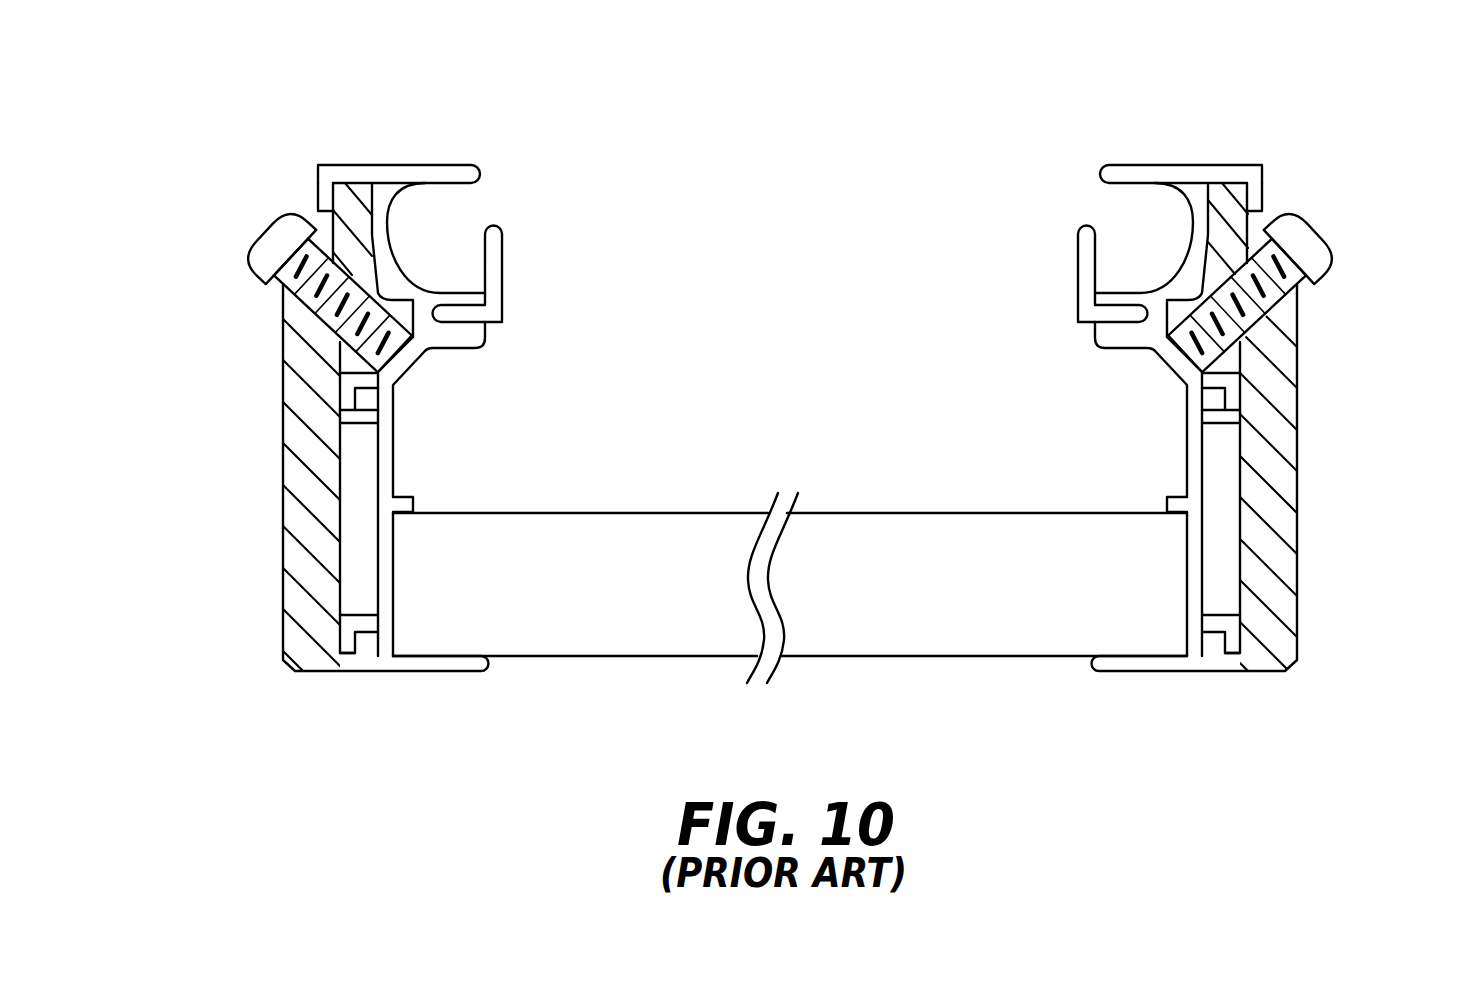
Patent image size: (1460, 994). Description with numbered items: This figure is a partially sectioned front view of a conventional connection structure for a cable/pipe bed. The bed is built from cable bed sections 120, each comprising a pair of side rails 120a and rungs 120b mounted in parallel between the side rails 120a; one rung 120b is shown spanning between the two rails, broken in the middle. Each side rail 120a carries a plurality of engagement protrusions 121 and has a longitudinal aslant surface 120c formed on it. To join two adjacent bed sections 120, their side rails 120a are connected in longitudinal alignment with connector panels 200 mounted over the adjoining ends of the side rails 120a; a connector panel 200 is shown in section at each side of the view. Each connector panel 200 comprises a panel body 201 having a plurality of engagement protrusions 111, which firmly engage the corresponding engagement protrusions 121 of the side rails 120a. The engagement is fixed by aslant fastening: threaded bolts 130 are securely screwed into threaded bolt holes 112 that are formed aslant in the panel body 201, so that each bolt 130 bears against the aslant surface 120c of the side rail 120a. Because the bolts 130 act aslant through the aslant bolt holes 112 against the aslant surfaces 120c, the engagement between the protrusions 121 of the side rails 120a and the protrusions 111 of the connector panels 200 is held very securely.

The engagement protrusion 111 is at (786, 424).
The threaded bolt hole 112 is at (322, 306).
The cable bed section 120 is at (790, 375).
The side rail 120a is at (428, 160).
The rung 120b is at (993, 530).
The aslant surface 120c is at (410, 349).
The engagement protrusion 121 is at (328, 196).
The threaded bolt 130 is at (282, 234).
The connector panel 200 is at (759, 398).
The panel body 201 is at (300, 535).